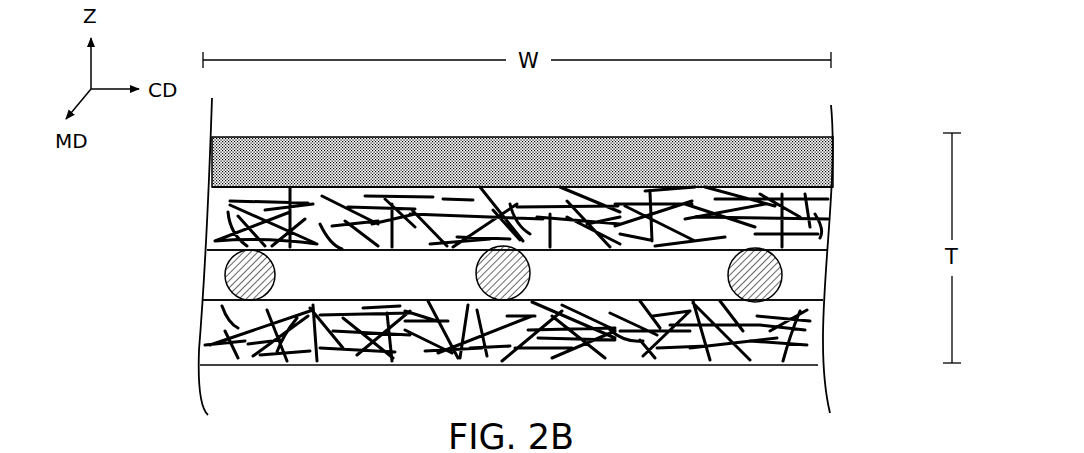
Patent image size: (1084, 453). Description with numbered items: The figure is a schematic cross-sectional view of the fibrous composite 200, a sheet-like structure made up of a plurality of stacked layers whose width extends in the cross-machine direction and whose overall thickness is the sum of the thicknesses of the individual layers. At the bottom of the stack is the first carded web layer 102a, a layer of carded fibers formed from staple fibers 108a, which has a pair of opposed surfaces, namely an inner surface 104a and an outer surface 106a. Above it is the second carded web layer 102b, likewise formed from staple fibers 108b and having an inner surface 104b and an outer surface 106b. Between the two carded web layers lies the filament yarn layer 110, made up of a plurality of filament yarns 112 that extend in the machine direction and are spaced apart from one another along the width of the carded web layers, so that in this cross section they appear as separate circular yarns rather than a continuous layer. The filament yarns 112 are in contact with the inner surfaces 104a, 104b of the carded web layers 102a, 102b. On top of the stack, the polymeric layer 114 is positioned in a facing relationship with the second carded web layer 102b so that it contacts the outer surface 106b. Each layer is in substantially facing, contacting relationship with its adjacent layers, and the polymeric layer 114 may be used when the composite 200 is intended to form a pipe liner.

The composite 200 is at (890, 104).
The polymeric layer 114 is at (204, 160).
The second carded web layer 102b is at (514, 187).
The first carded web layer 102a is at (511, 366).
The staple fibers 108b is at (818, 218).
The staple fibers 108a is at (795, 330).
The outer side or surface 106b is at (448, 187).
The outer side or surface 106a is at (733, 366).
The inner side or surface 104b is at (813, 254).
The inner side or surface 104a is at (813, 300).
The filament yarn layer 110 is at (512, 274).
The filament yarns 112 is at (228, 262).